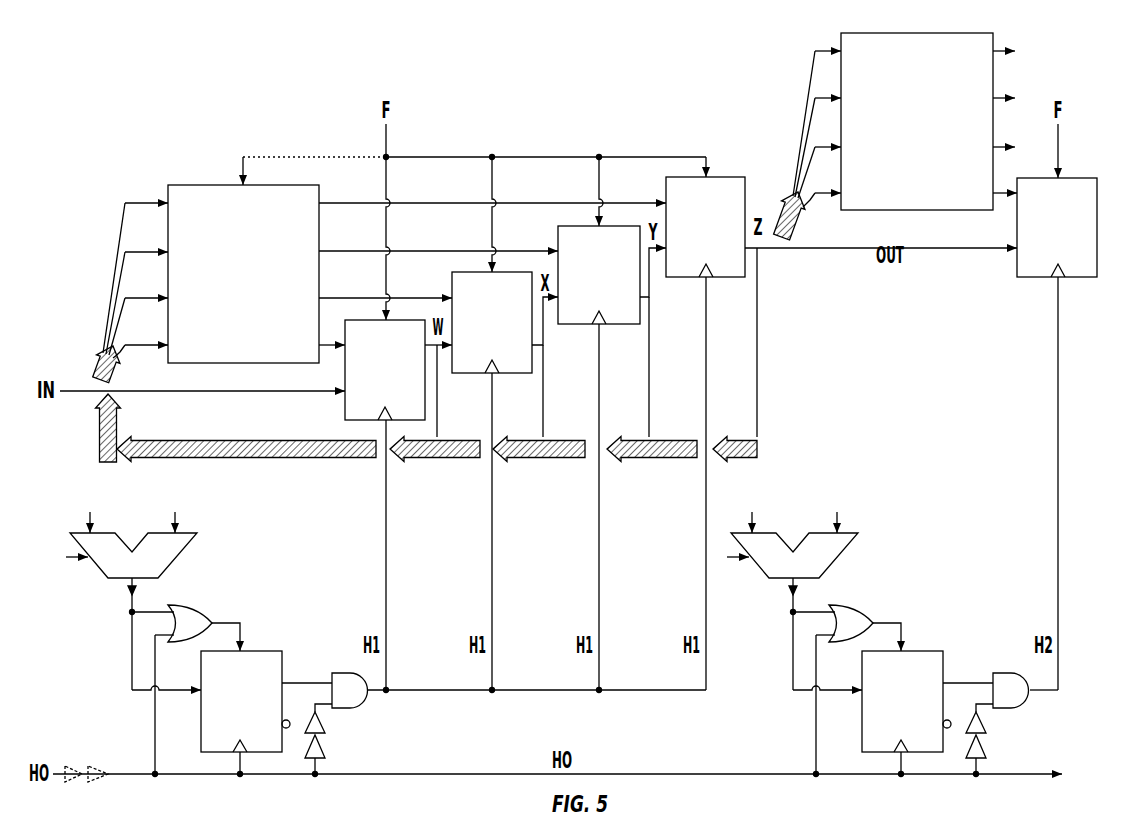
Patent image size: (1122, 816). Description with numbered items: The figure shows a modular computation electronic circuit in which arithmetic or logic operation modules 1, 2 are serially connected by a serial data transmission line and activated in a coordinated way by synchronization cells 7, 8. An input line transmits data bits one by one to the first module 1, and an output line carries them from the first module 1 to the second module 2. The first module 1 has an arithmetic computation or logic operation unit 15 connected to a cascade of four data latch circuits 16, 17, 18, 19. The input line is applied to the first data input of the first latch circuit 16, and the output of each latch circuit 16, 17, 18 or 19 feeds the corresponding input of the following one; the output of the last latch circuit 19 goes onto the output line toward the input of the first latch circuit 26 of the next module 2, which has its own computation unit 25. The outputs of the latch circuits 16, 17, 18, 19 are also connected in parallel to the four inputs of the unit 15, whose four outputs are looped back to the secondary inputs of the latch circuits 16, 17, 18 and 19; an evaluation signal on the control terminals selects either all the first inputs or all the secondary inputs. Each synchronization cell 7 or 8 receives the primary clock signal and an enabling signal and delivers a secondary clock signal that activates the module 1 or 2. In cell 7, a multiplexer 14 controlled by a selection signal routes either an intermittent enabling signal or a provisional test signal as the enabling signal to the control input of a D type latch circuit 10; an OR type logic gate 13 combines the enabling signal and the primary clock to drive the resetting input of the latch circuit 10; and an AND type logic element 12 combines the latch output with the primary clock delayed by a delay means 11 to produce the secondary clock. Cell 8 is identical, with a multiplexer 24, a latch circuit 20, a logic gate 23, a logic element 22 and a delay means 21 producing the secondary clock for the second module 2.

The first module 1 is at (272, 127).
The second module 2 is at (797, 107).
The synchronization cell 7 is at (267, 562).
The synchronization cell 8 is at (926, 562).
The latch circuit 10 is at (252, 701).
The delay means 11 is at (320, 744).
The logic element 12 is at (350, 690).
The logic gate 13 is at (190, 623).
The multiplexer 14 is at (126, 533).
The arithmetic computation or logic operation unit 15 is at (243, 274).
The data latch circuit 16 is at (385, 370).
The data latch circuit 17 is at (492, 322).
The data latch circuit 18 is at (599, 274).
The data latch circuit 19 is at (705, 226).
The latch circuit 20 is at (913, 701).
The delay means 21 is at (981, 744).
The logic element 22 is at (1011, 690).
The logic gate 23 is at (851, 623).
The multiplexer 24 is at (787, 533).
The arithmetic computation or logic operation unit 25 is at (917, 121).
The data latch circuit 26 is at (1057, 227).